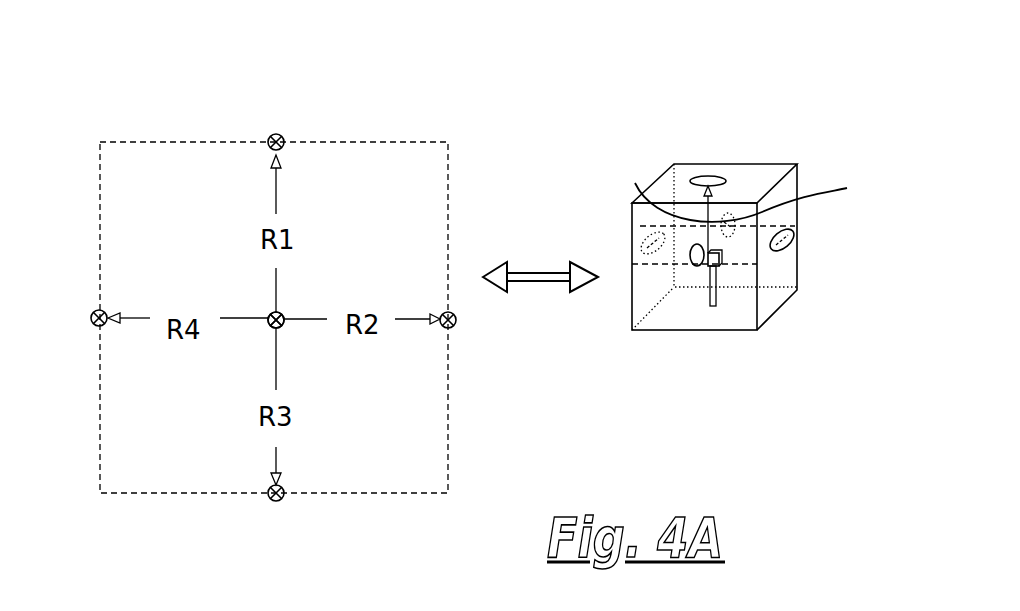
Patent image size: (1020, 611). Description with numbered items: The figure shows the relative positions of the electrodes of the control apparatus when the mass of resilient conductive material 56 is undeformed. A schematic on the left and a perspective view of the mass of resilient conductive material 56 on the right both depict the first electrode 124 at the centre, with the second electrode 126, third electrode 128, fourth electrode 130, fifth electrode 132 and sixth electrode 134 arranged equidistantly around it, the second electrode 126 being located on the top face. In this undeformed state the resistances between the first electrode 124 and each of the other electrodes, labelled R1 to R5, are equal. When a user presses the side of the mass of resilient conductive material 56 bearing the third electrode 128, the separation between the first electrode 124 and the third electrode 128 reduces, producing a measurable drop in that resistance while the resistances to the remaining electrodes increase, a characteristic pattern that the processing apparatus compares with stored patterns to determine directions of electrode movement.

The mass of resilient conductive material 56 is at (768, 177).
The first electrode 124 is at (280, 326).
The second electrode 126 is at (716, 178).
The third electrode 128 is at (96, 309).
The fourth electrode 130 is at (268, 135).
The fifth electrode 132 is at (455, 325).
The sixth electrode 134 is at (272, 500).